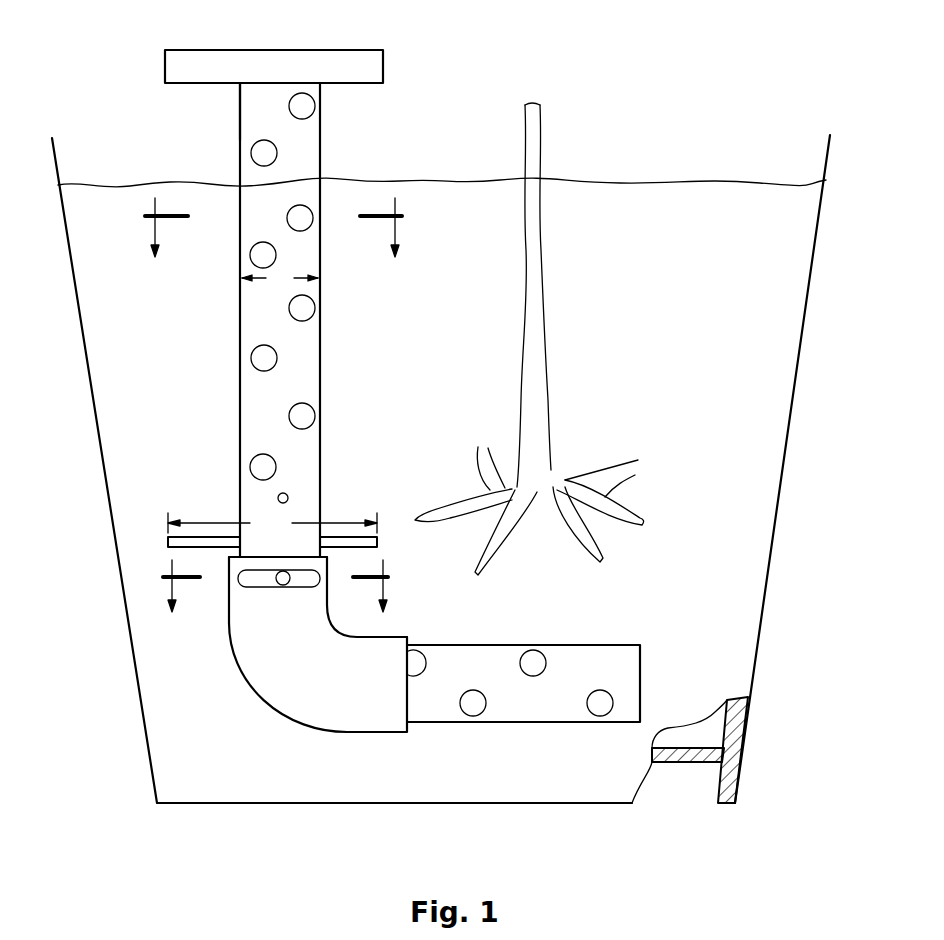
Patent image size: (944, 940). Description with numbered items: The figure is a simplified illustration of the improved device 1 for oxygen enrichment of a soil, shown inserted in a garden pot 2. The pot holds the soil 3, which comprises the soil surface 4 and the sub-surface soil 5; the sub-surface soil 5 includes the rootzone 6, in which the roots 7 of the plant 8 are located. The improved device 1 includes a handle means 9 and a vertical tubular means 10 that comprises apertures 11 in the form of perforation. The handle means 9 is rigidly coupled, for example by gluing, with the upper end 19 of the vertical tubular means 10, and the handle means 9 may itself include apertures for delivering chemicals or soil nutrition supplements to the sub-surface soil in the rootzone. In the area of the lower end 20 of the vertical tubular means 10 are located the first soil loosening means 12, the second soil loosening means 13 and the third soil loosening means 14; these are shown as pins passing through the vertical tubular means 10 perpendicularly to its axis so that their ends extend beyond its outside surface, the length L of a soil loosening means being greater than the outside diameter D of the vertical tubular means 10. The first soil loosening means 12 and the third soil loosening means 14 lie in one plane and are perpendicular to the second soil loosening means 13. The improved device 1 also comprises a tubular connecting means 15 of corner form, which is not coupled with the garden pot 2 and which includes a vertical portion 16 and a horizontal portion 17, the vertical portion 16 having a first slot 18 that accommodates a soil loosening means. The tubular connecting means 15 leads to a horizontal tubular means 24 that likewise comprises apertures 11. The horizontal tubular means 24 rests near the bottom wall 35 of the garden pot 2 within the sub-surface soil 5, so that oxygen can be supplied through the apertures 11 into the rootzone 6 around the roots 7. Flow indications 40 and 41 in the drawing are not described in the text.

The improved device 1 is at (437, 80).
The garden pot 2 is at (55, 163).
The soil 3 is at (442, 173).
The soil surface 4 is at (665, 185).
The sub-surface soil 5 is at (745, 548).
The rootzone 6 is at (538, 517).
The roots 7 is at (478, 447).
The plant 8 is at (532, 140).
The handle means 9 is at (352, 75).
The vertical tubular means 10 is at (289, 320).
The apertures 11 is at (305, 107).
The first soil loosening means 12 is at (288, 496).
The second soil loosening means 13 is at (372, 542).
The third soil loosening means 14 is at (283, 586).
The tubular connecting means 15 is at (295, 688).
The vertical portion 16 is at (222, 585).
The horizontal portion 17 is at (382, 740).
The first slot 18 is at (312, 580).
The upper end 19 is at (236, 104).
The lower end 20 is at (333, 510).
The horizontal tubular means 24 is at (532, 705).
The bottom wall 35 is at (700, 760).
The downward flow arrows 40 is at (274, 228).
The downward flow arrows lower 41 is at (277, 587).